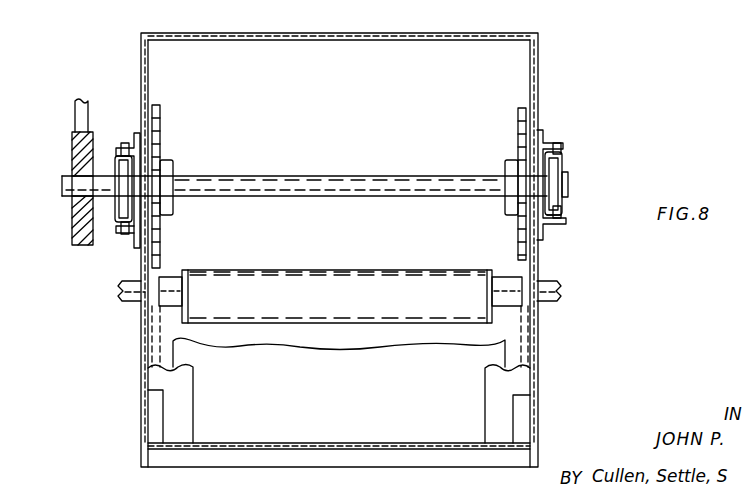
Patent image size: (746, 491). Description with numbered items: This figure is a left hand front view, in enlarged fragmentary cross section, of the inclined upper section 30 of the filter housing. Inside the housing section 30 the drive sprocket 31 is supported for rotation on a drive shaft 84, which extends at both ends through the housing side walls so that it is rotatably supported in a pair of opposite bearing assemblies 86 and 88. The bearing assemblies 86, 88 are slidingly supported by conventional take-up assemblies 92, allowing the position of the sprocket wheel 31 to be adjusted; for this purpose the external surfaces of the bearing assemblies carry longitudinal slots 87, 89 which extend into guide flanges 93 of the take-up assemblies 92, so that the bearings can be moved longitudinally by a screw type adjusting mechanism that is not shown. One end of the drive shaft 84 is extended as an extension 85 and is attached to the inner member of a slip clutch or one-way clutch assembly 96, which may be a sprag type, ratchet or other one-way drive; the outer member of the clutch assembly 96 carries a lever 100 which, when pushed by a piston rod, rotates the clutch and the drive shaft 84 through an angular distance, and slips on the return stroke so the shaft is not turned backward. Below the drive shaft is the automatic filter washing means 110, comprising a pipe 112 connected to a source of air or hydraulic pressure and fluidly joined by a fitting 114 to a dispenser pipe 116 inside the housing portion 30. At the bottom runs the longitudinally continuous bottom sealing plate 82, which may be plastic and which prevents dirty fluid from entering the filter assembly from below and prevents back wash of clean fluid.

The inclined upper section 30 is at (537, 66).
The drive sprocket 31 is at (161, 115).
The bottom sealing plate 82 is at (385, 363).
The drive shaft 84 is at (343, 177).
The extended end of drive shaft 85 is at (63, 186).
The bearing assembly 86 is at (123, 203).
The longitudinal slot 87 is at (558, 213).
The bearing assembly 88 is at (552, 192).
The longitudinal slot 89 is at (565, 143).
The take-up assembly 92 is at (128, 128).
The guide flange 93 is at (123, 143).
The slip clutch assembly 96 is at (70, 246).
The lever 100 is at (77, 118).
The automatic filter washing means 110 is at (478, 245).
The pipe 112 is at (562, 291).
The fitting 114 is at (170, 287).
The dispenser pipe 116 is at (307, 288).